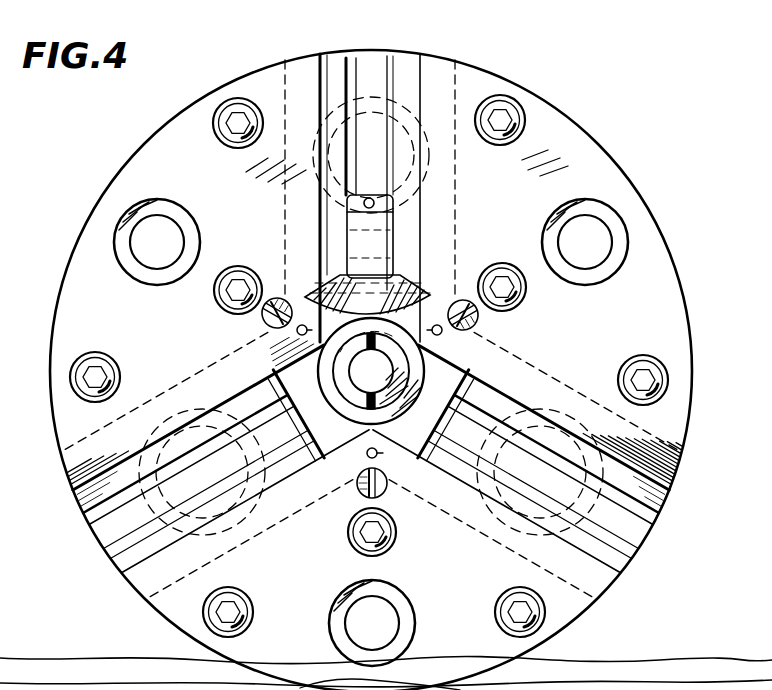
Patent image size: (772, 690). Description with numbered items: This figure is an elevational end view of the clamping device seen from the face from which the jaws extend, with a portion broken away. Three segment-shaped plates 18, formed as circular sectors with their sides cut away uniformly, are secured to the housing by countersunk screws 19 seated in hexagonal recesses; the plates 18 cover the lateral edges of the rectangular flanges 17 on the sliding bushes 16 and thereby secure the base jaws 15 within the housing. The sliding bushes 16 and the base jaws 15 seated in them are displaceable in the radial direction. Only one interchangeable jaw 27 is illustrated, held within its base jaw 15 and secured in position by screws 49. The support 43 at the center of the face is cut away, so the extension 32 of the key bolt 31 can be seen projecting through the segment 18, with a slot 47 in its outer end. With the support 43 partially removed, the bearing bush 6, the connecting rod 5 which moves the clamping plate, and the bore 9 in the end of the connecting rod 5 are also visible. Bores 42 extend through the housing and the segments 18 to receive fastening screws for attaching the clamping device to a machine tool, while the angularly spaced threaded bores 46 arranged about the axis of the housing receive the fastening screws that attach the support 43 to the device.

The connecting rod 5 is at (326, 372).
The bearing bush 6 is at (389, 370).
The bore 9 is at (392, 408).
The base jaw 15 is at (410, 62).
The sliding bush 16 is at (440, 163).
The rectangular flange 17 is at (286, 72).
The segment-shaped plate 18 is at (150, 152).
The countersunk screw 19 is at (234, 104).
The interchangeable jaw 27 is at (393, 230).
The key bolt 31 is at (495, 272).
The extension 32 is at (472, 330).
The bore 42 is at (128, 240).
The support 43 is at (310, 290).
The threaded bore 46 is at (437, 325).
The slot 47 is at (480, 318).
The screw 49 is at (364, 204).